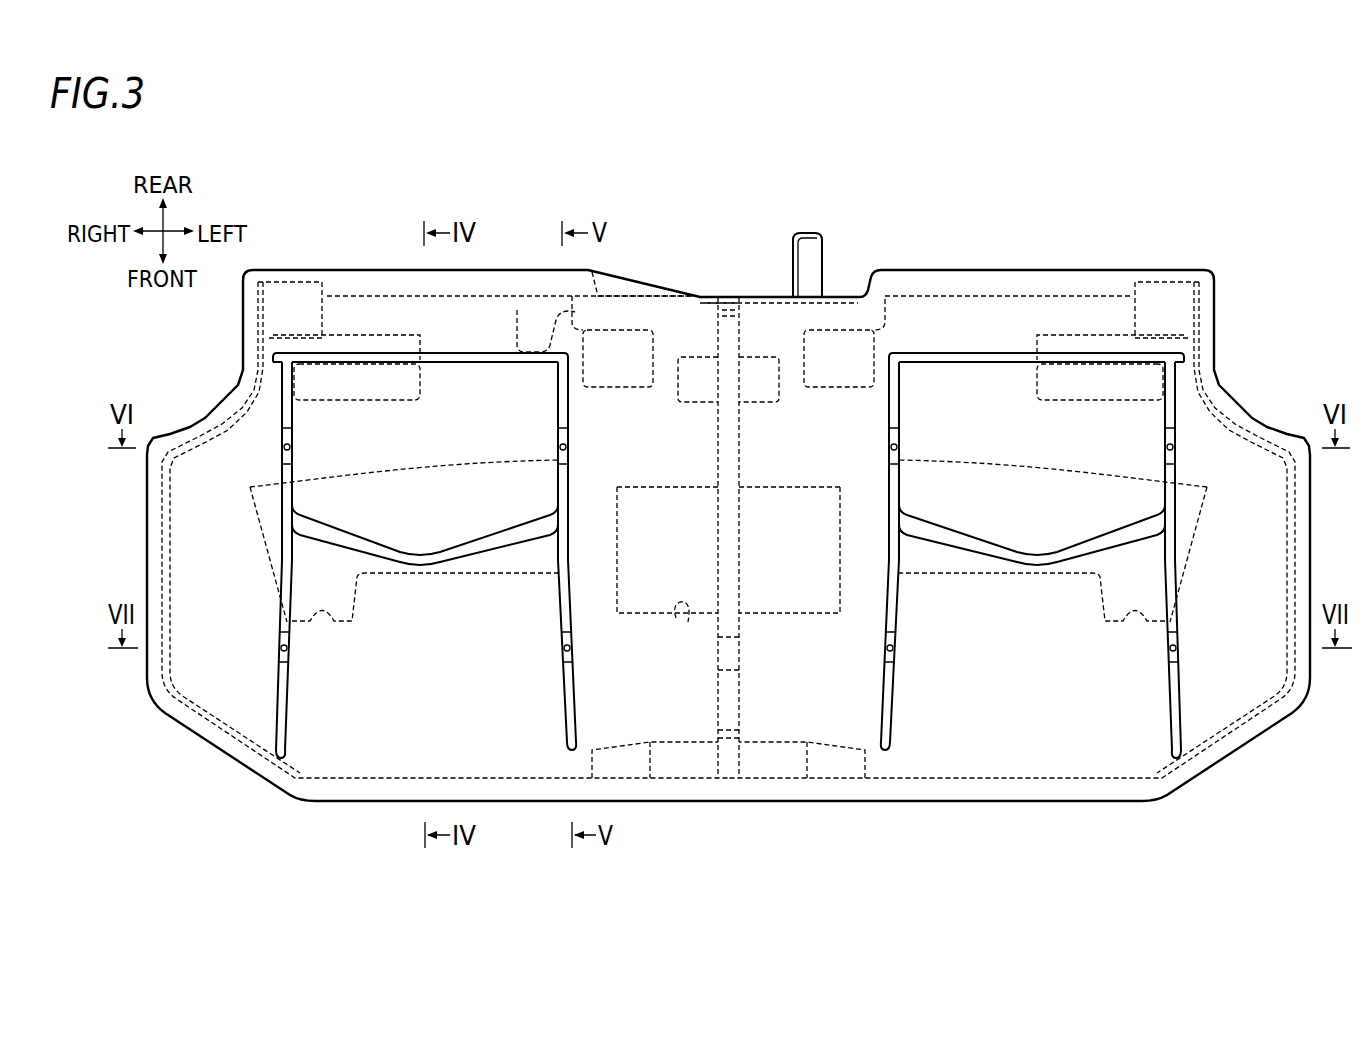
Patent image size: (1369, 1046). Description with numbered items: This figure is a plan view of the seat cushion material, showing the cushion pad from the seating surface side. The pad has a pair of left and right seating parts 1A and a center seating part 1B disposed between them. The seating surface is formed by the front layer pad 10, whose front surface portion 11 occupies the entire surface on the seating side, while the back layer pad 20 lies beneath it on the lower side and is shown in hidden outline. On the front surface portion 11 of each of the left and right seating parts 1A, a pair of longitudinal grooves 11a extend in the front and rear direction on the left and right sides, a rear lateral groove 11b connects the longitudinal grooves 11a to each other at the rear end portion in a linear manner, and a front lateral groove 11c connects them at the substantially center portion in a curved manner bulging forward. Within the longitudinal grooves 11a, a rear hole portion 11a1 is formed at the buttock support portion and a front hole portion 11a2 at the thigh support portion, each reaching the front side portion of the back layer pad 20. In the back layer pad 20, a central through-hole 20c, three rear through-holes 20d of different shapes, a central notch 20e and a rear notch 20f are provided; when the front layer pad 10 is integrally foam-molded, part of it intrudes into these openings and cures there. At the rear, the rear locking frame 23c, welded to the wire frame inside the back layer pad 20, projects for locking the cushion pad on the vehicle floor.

The left and right seating parts 1A is at (467, 393).
The center seating part 1B is at (758, 427).
The front layer pad 10 is at (1273, 437).
The front surface portion 11 is at (1227, 397).
The longitudinal grooves 11a is at (282, 552).
The rear hole portion 11a1 is at (292, 440).
The front hole portion 11a2 is at (280, 641).
The rear lateral groove 11b is at (357, 350).
The front lateral groove 11c is at (446, 564).
The back layer pad 20 is at (1250, 514).
The central through-hole 20c is at (331, 622).
The rear through-holes 20d is at (330, 384).
The central notch 20e is at (688, 622).
The rear notch 20f is at (680, 395).
The rear locking frame 23c is at (808, 233).